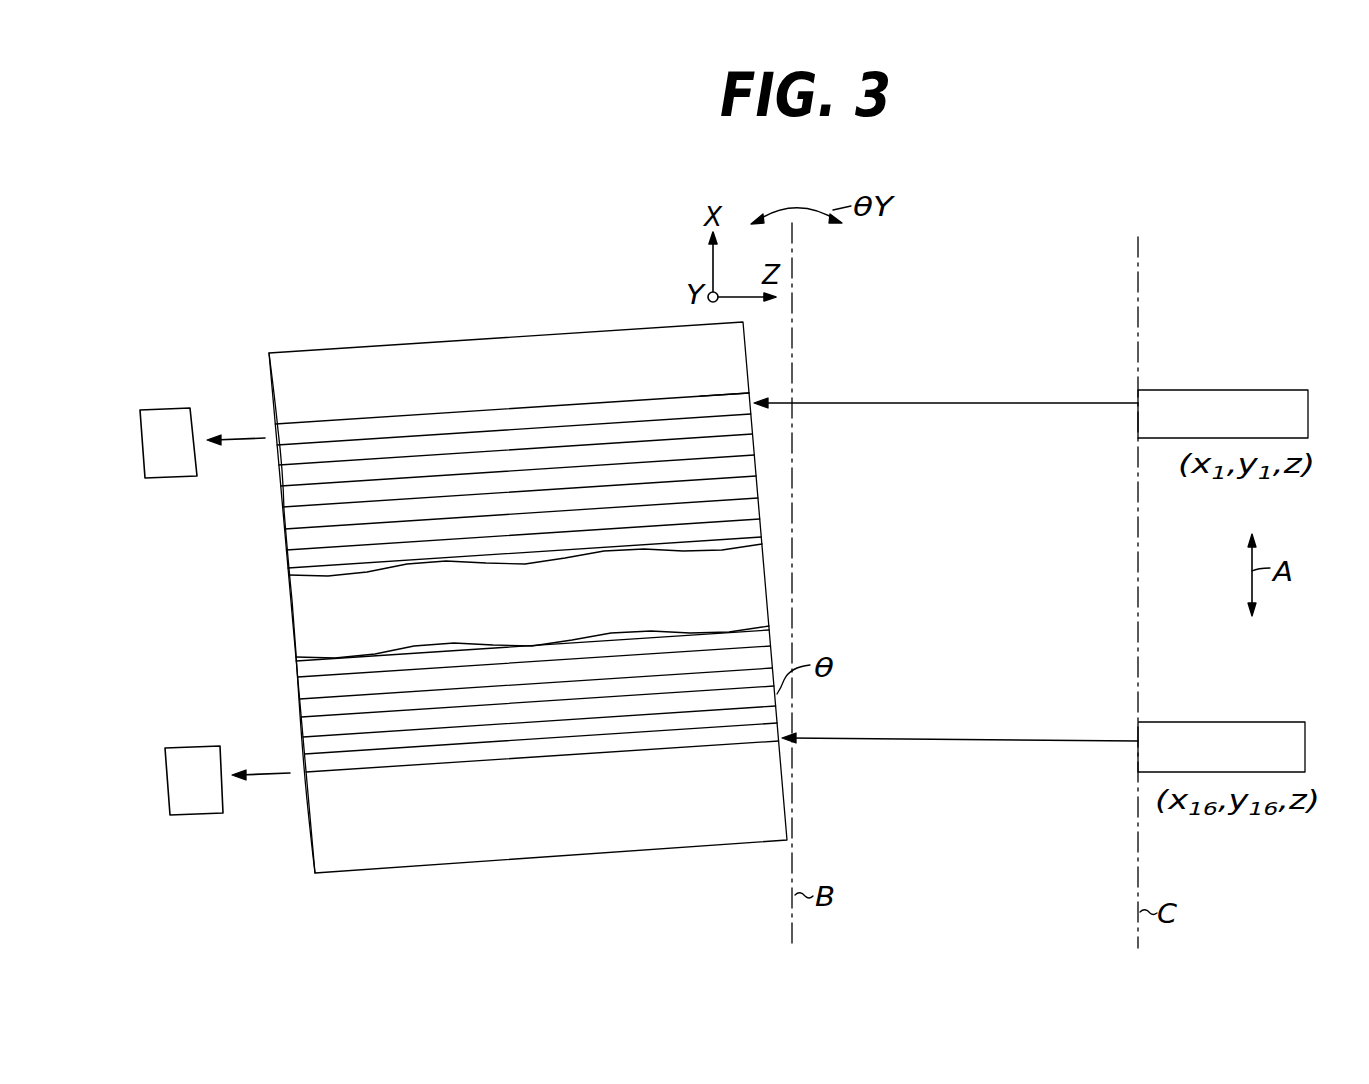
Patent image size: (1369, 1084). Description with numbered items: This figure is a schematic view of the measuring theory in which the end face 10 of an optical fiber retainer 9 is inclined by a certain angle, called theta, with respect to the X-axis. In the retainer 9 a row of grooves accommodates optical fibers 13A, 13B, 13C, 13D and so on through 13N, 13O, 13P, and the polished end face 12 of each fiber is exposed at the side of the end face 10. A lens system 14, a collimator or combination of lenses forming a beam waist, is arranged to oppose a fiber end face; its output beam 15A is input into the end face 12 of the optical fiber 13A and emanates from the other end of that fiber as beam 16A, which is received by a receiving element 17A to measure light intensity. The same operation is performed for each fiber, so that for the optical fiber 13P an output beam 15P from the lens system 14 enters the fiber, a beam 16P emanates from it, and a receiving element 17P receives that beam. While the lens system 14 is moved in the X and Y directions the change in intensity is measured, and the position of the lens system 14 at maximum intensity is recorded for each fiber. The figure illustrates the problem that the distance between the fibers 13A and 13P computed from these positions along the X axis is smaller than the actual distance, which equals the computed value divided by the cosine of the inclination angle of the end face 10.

The optical fiber retainer 9 is at (489, 330).
The end face 10 is at (748, 360).
The end face 12 is at (751, 404).
The optical fiber 13A is at (600, 408).
The optical fiber 13B is at (500, 458).
The optical fiber 13C is at (403, 507).
The optical fiber 13D is at (348, 552).
The optical fiber 13N is at (482, 680).
The optical fiber 13O is at (583, 710).
The optical fiber 13P is at (685, 742).
The lens system 14 is at (1257, 400).
The output beam 15A is at (1012, 400).
The output beam 15P is at (1020, 743).
The emanated beam 16A is at (245, 437).
The emanated beam 16P is at (268, 773).
The receiving element 17A is at (168, 422).
The receiving element 17P is at (195, 758).